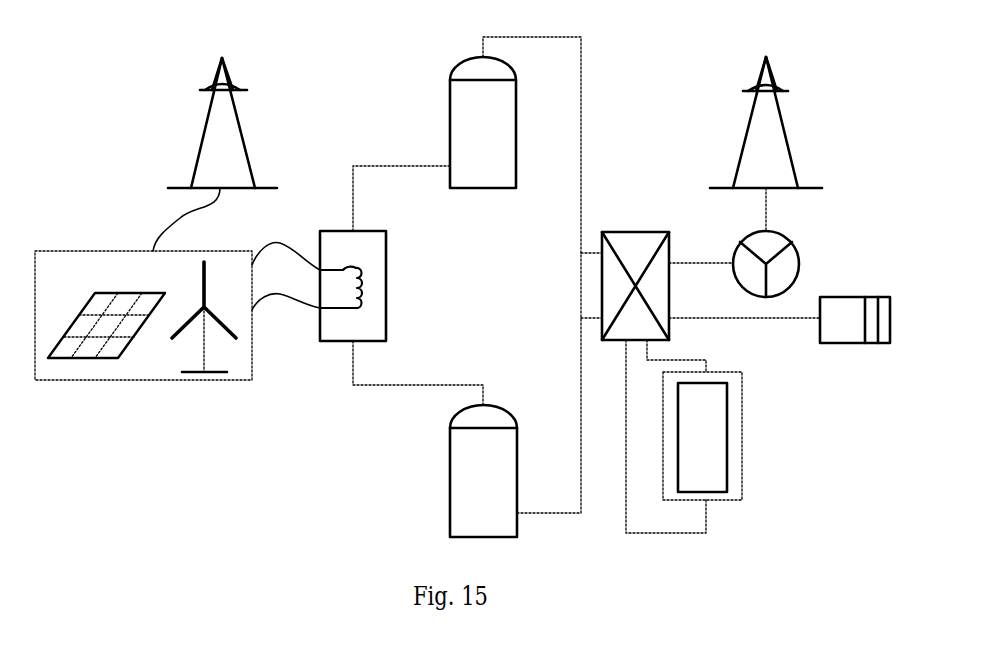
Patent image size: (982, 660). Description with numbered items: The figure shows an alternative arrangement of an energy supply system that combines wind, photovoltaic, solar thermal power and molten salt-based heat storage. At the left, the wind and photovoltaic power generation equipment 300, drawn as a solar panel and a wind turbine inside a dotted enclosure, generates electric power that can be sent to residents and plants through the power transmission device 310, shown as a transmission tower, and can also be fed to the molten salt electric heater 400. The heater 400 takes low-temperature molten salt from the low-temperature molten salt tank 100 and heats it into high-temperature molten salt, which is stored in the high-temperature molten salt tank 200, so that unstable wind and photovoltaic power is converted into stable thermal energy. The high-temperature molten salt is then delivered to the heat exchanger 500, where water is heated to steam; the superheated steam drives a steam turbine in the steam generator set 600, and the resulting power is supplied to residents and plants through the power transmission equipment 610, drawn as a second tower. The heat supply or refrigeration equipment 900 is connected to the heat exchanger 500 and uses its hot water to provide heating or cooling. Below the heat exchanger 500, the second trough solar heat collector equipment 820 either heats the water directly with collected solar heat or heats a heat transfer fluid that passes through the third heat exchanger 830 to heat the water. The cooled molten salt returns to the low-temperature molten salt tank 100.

The low-temperature molten salt tank 100 is at (472, 502).
The high-temperature molten salt tank 200 is at (473, 115).
The wind and photovoltaic power generation equipment 300 is at (142, 373).
The power transmission device 310 is at (233, 143).
The molten salt electric heater 400 is at (373, 282).
The heat exchanger 500 is at (613, 307).
The steam generator set 600 is at (778, 275).
The power transmission equipment 610 is at (768, 143).
The second trough solar heat collector equipment 820 is at (713, 432).
The third heat exchanger 830 is at (742, 465).
The heat supply or refrigeration equipment 900 is at (847, 330).